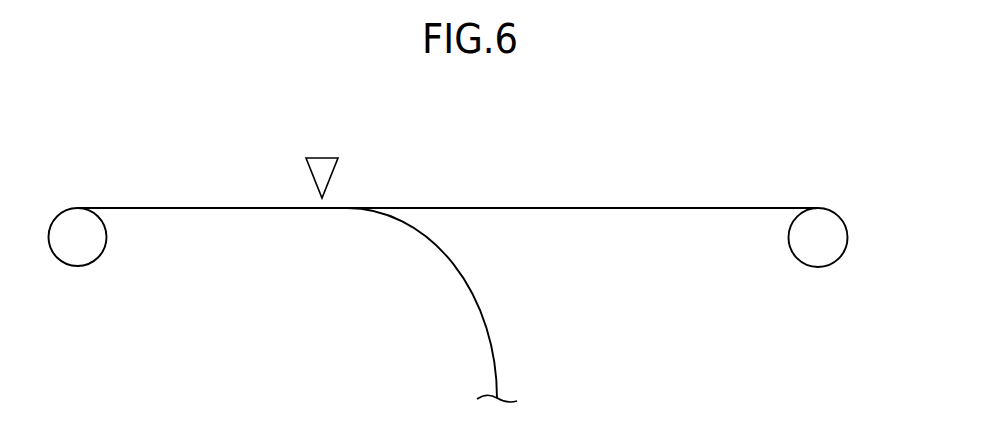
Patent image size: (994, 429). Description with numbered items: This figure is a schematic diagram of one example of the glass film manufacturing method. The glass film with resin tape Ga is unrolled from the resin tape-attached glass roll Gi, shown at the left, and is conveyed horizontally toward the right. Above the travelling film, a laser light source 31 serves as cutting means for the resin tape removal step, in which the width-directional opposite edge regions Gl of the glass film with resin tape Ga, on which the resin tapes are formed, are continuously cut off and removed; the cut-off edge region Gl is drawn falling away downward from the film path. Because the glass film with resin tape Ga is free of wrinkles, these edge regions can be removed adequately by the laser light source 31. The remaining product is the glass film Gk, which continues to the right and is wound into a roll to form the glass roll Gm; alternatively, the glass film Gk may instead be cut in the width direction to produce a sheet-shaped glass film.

The laser light source 31 is at (321, 165).
The glass film with resin tape Ga is at (157, 205).
The resin tape-attached glass roll Gi is at (77, 255).
The glass film Gk is at (584, 206).
The width-directional opposite edge region Gl is at (485, 328).
The glass roll Gm is at (833, 232).